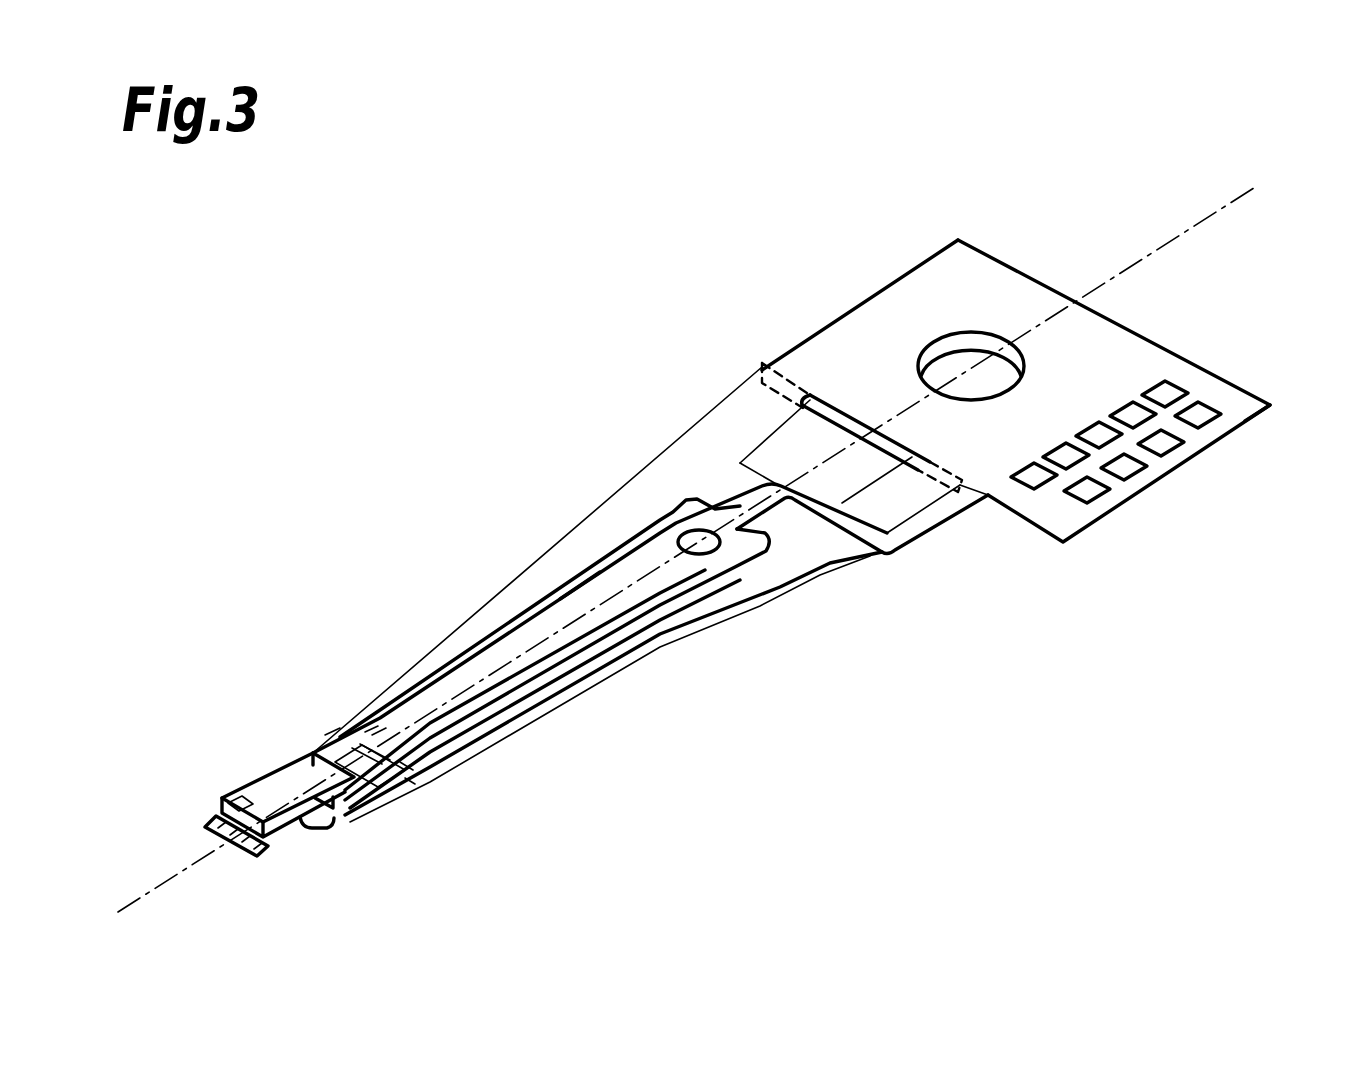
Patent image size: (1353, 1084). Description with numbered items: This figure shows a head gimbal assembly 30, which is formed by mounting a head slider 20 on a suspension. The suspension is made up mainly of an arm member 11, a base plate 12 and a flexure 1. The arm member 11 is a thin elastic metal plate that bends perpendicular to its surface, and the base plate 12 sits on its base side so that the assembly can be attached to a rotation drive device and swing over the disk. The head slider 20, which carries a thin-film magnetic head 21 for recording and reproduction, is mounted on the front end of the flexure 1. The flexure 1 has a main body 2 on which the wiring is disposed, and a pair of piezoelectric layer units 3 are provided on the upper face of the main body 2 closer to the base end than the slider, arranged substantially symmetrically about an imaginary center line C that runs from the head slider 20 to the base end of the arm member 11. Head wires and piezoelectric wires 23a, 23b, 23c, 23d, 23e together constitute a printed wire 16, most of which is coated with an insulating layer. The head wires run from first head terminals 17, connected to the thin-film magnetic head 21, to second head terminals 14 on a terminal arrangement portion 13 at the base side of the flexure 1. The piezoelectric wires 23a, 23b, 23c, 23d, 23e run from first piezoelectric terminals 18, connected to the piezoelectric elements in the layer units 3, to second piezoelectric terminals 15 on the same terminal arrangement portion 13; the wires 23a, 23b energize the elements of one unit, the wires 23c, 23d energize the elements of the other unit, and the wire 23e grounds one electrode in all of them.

The flexure 1 is at (693, 487).
The main body 2 is at (593, 657).
The piezoelectric layer unit 3 is at (302, 767).
The arm member 11 is at (680, 623).
The base plate 12 is at (803, 398).
The terminal arrangement portion 13 is at (1256, 403).
The second head terminals 14 is at (1087, 490).
The second piezoelectric terminals 15 is at (1034, 476).
The printed wire 16 is at (573, 592).
The first head terminals 17 is at (250, 851).
The first piezoelectric terminals 18 is at (373, 754).
The head slider 20 is at (238, 788).
The thin-film magnetic head 21 is at (226, 800).
The piezoelectric wire 23a is at (333, 730).
The piezoelectric wire 23b is at (372, 728).
The piezoelectric wire 23c is at (407, 767).
The piezoelectric wire 23d is at (410, 776).
The piezoelectric wire 23e is at (378, 730).
The head gimbal assembly 30 is at (1030, 259).
The imaginary center line C is at (165, 874).